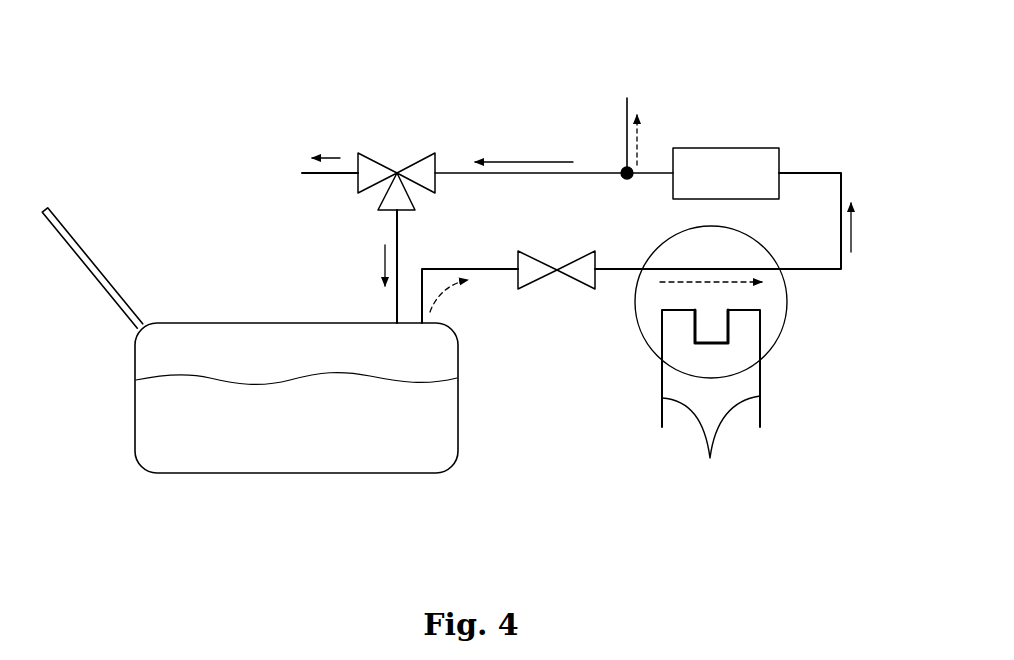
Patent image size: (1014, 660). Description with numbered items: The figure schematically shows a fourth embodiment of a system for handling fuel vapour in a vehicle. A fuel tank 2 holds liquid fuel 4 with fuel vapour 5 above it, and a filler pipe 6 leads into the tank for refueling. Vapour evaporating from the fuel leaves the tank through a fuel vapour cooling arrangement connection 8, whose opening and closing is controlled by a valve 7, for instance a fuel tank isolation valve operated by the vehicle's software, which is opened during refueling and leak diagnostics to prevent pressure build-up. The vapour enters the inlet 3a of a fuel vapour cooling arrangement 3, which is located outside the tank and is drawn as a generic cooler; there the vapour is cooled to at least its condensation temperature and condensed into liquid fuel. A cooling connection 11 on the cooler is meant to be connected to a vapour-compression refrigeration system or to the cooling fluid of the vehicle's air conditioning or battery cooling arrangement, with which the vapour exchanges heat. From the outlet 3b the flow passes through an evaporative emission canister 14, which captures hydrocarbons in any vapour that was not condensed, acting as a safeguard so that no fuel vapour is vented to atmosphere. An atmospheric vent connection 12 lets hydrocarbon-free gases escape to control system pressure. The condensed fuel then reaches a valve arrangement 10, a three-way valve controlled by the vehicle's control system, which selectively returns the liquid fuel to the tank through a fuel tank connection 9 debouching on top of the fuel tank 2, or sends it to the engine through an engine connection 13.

The fuel tank 2 is at (135, 392).
The fuel vapour cooling arrangement 3 is at (787, 325).
The inlet 3a is at (640, 272).
The outlet 3b is at (782, 271).
The fuel 4 is at (291, 438).
The fuel vapour 5 is at (291, 363).
The filler pipe 6 is at (96, 264).
The valve 7 is at (577, 285).
The fuel vapour cooling arrangement connection 8 is at (500, 272).
The fuel tank connection 9 is at (393, 311).
The valve arrangement 10 is at (418, 158).
The cooling connection 11 is at (711, 400).
The atmospheric vent connection 12 is at (627, 130).
The engine connection 13 is at (320, 174).
The evaporative emission canister 14 is at (712, 187).